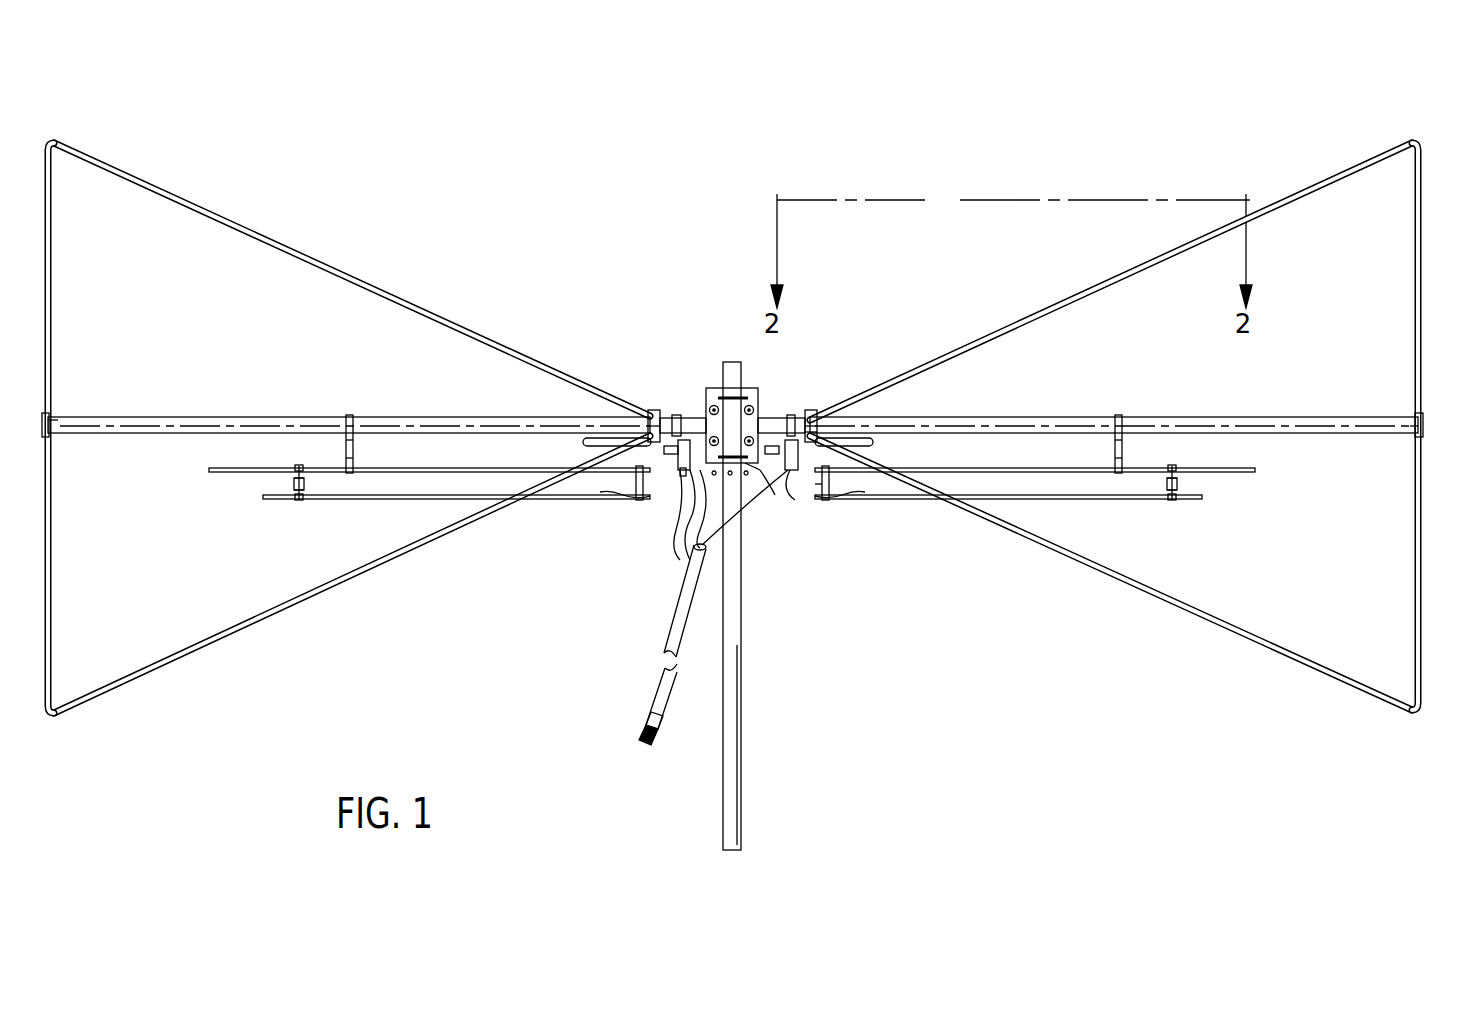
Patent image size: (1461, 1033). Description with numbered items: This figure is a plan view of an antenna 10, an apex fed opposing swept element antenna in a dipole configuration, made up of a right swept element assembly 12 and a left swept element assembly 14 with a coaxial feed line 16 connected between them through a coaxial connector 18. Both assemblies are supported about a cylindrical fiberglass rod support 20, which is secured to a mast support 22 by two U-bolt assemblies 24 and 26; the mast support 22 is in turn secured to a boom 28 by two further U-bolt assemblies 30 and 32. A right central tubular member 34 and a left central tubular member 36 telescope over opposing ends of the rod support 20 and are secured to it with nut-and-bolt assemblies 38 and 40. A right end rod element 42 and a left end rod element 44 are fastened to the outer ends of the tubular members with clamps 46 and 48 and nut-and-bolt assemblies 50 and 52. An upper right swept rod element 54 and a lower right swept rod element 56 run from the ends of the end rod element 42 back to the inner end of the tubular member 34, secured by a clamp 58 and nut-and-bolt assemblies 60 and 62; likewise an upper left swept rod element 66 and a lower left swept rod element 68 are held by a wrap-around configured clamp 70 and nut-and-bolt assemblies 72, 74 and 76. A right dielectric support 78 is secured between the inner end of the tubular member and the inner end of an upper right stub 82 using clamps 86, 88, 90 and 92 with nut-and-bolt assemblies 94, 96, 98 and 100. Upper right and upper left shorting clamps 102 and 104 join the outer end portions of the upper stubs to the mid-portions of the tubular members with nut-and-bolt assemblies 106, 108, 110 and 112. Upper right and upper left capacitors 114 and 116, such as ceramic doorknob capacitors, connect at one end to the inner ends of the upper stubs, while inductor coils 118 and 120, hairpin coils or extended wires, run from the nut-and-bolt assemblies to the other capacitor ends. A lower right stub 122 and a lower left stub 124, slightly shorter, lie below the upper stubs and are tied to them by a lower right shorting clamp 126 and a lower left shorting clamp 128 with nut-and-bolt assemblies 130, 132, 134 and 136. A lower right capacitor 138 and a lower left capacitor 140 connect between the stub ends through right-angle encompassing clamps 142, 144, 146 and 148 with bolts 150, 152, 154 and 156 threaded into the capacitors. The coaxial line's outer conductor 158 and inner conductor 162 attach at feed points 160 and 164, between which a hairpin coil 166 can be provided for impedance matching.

The antenna 10 is at (1120, 88).
The right swept element assembly 12 is at (1114, 426).
The left swept element assembly 14 is at (349, 428).
The coaxial feed line 16 is at (682, 600).
The coaxial connector 18 is at (640, 728).
The cylindrical fiberglass rod support 20 is at (760, 395).
The mast support 22 is at (710, 400).
The U-bolt assembly 24 is at (714, 404).
The U-bolt assembly 26 is at (752, 404).
The boom 28 is at (742, 540).
The U-bolt assembly 30 is at (715, 473).
The U-bolt assembly 32 is at (748, 392).
The right central tubular member 34 is at (945, 417).
The left central tubular member 36 is at (395, 417).
The right insulator tube 38 is at (778, 416).
The nut-and-bolt assembly 40 is at (684, 416).
The right end rod element 42 is at (1414, 515).
The left end rod element 44 is at (52, 573).
The clamp 46 is at (1416, 418).
The clamp 48 is at (50, 416).
The nut-and-bolt assembly 50 is at (1424, 426).
The nut-and-bolt assembly 52 is at (68, 418).
The upper right swept rod element 54 is at (1276, 208).
The lower right swept rod element 56 is at (1198, 608).
The clamp 58 is at (812, 410).
The nut-and-bolt assembly 60 is at (815, 414).
The nut-and-bolt assembly 62 is at (820, 422).
The upper left swept rod element 66 is at (262, 235).
The lower left swept rod element 68 is at (280, 608).
The left clamp part 70 is at (654, 410).
The nut-and-bolt assembly 72 is at (650, 410).
The wrap-around configured clamp 74 is at (645, 420).
The nut-and-bolt assembly 76 is at (648, 423).
The right dielectric support 78 is at (763, 476).
The upper right stub 82 is at (793, 414).
The clamp 86 is at (674, 414).
The clamp 88 is at (690, 510).
The clamp 90 is at (1070, 468).
The clamp 92 is at (416, 468).
The nut-and-bolt assembly 94 is at (769, 455).
The nut-and-bolt assembly 96 is at (799, 455).
The nut-and-bolt assembly 98 is at (692, 455).
The nut-and-bolt assembly 100 is at (664, 452).
The upper right shorting clamp 102 is at (1122, 416).
The upper left shorting clamp 104 is at (350, 416).
The nut-and-bolt assembly 106 is at (1123, 440).
The nut-and-bolt assembly 108 is at (1123, 458).
The nut-and-bolt assembly 110 is at (354, 438).
The nut-and-bolt assembly 112 is at (354, 458).
The upper right capacitor 114 is at (880, 446).
The upper left capacitor 116 is at (585, 444).
The inductor coil 118 is at (872, 442).
The inductor coil 120 is at (582, 441).
The lower right stub 122 is at (1058, 500).
The lower left stub 124 is at (392, 500).
The lower right shorting clamp 126 is at (805, 482).
The lower left shorting clamp 128 is at (682, 478).
The nut-and-bolt assembly 130 is at (829, 478).
The nut-and-bolt assembly 132 is at (859, 488).
The nut-and-bolt assembly 134 is at (636, 478).
The nut-and-bolt assembly 136 is at (601, 488).
The lower right capacitor 138 is at (1166, 482).
The lower left capacitor 140 is at (305, 486).
The right-angle encompassing clamp 142 is at (1176, 466).
The right-angle encompassing clamp 144 is at (1172, 500).
The right-angle encompassing clamp 146 is at (296, 466).
The right-angle encompassing clamp 148 is at (297, 500).
The bolt 150 is at (1178, 478).
The bolt 152 is at (1178, 490).
The bolt 154 is at (292, 478).
The bolt 156 is at (292, 490).
The outer conductor 158 is at (700, 540).
The feed point 160 is at (678, 530).
The inner conductor 162 is at (704, 548).
The feed point 164 is at (795, 500).
The hairpin coil 166 is at (775, 495).